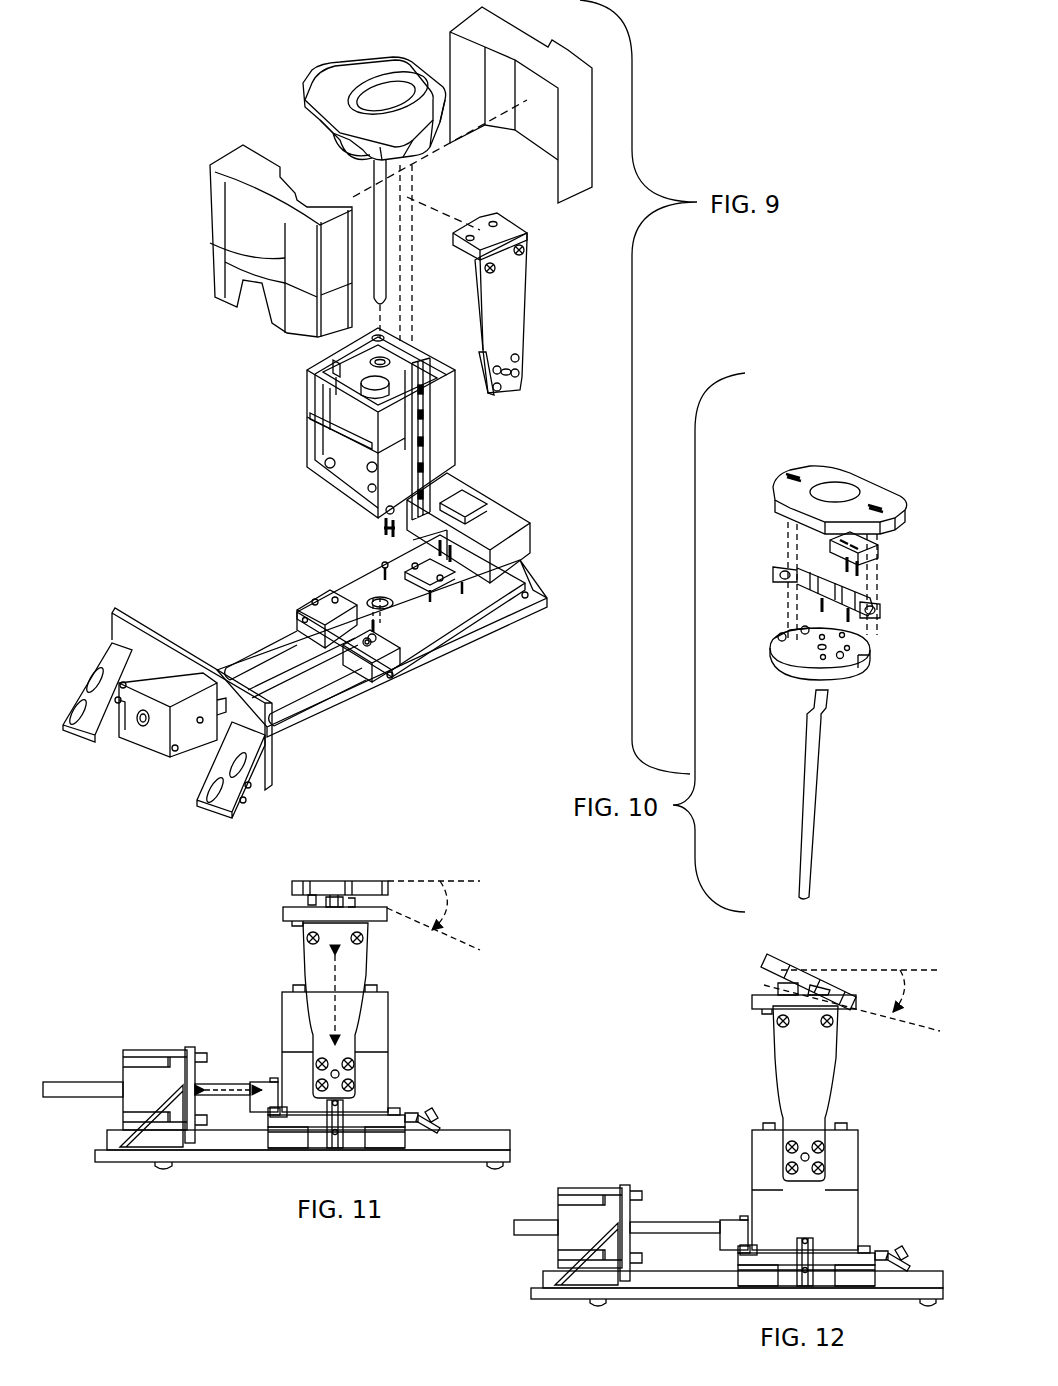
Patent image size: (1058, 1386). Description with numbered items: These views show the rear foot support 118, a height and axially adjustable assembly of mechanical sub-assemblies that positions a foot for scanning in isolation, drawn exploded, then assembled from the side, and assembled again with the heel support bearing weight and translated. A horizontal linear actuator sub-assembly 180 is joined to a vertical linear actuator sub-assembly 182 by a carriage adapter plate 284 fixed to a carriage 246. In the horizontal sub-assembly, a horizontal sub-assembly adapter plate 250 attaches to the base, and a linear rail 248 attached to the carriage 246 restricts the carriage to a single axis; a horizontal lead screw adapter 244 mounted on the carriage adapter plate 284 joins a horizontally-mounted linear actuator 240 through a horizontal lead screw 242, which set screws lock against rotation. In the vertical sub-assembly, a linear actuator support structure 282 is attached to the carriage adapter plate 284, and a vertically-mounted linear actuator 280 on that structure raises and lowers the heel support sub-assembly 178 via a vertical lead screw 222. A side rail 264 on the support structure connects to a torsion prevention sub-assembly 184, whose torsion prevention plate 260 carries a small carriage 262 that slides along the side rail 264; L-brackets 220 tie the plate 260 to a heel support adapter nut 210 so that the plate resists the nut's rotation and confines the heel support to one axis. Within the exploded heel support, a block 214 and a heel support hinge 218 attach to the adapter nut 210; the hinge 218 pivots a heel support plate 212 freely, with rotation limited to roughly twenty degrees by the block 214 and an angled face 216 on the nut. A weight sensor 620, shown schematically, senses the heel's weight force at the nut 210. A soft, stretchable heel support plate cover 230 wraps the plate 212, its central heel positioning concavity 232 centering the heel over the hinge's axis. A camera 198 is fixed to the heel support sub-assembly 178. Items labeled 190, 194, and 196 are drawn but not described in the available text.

In FIG. 9, the rear foot support 118 is at (150, 130).
In FIG. 11, the rear foot support 118 is at (187, 997).
In FIG. 12, the rear foot support 118 is at (683, 1132).
In FIG. 9, the heel support sub-assembly 178 is at (288, 85).
In FIG. 12, the heel support sub-assembly 178 is at (730, 1062).
In FIG. 9, the horizontal linear actuator sub-assembly 180 is at (205, 573).
In FIG. 9, the vertical linear actuator sub-assembly 182 is at (280, 423).
In FIG. 9, the torsion prevention sub-assembly 184 is at (547, 392).
In FIG. 9, the mounting bracket 190 is at (500, 523).
In FIG. 9, the housing shell 194 is at (220, 203).
In FIG. 9, the fastener hardware 196 is at (440, 593).
In FIG. 11, the camera 198 is at (440, 1123).
In FIG. 10, the heel support adapter nut 210 is at (861, 663).
In FIG. 10, the heel support plate 212 is at (824, 480).
In FIG. 11, the heel support plate 212 is at (373, 883).
In FIG. 12, the heel support plate 212 is at (770, 958).
In FIG. 10, the block 214 is at (878, 554).
In FIG. 11, the block 214 is at (293, 900).
In FIG. 10, the angled face 216 is at (787, 658).
In FIG. 11, the angled face 216 is at (385, 907).
In FIG. 10, the heel support hinge 218 is at (872, 606).
In FIG. 9, the L-brackets 220 is at (527, 233).
In FIG. 9, the vertical lead screw 222 is at (382, 177).
In FIG. 9, the heel support plate cover 230 is at (343, 75).
In FIG. 9, the heel positioning concavity 232 is at (392, 95).
In FIG. 9, the horizontally-mounted linear actuator 240 is at (160, 732).
In FIG. 9, the horizontal lead screw 242 is at (277, 642).
In FIG. 9, the horizontal lead screw adapter 244 is at (317, 610).
In FIG. 9, the carriage 246 is at (373, 668).
In FIG. 9, the linear rail 248 is at (308, 685).
In FIG. 9, the horizontal sub-assembly adapter plate 250 is at (282, 735).
In FIG. 9, the torsion prevention plate 260 is at (513, 298).
In FIG. 9, the small carriage 262 is at (485, 397).
In FIG. 9, the side rail 264 is at (433, 472).
In FIG. 9, the vertically-mounted linear actuator 280 is at (370, 375).
In FIG. 9, the linear actuator support structure 282 is at (308, 455).
In FIG. 9, the carriage adapter plate 284 is at (402, 615).
In FIG. 10, the weight sensor 620 is at (840, 657).